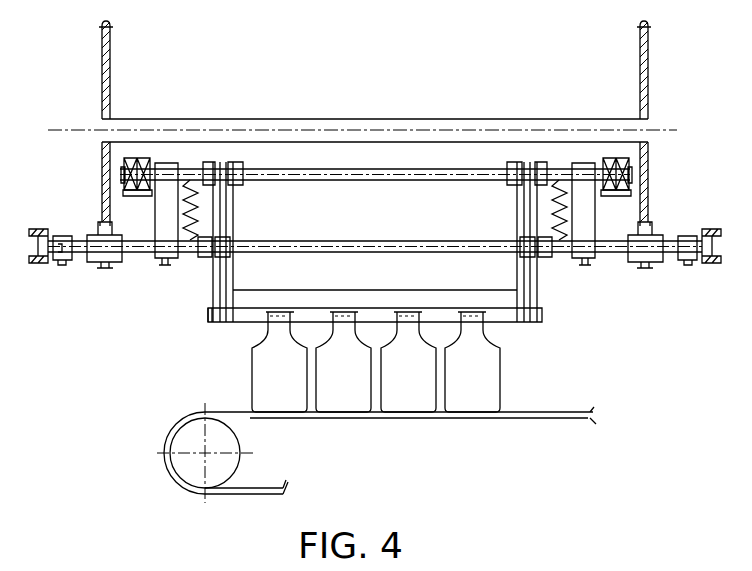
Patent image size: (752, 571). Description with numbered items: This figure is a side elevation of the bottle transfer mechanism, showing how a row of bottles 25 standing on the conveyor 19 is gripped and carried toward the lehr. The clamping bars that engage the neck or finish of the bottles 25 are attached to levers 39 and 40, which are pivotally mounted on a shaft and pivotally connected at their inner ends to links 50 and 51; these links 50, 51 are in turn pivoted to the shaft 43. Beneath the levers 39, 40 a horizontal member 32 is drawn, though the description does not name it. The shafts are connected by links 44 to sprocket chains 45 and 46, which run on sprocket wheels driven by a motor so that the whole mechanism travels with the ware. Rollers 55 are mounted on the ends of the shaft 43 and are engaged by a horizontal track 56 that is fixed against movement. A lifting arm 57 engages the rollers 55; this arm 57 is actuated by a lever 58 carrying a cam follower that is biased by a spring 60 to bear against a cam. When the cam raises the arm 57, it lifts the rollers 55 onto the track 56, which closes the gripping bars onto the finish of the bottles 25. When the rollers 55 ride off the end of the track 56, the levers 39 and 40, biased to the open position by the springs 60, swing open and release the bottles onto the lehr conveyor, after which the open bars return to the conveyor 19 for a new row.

The conveyor 19 is at (452, 418).
The bottles 25 is at (252, 389).
The support bar 32 is at (542, 315).
The lever 39 is at (210, 300).
The lever 40 is at (230, 278).
The shaft 43 is at (430, 168).
The links 44 is at (118, 264).
The sprocket chain 45 is at (113, 232).
The sprocket chain 46 is at (655, 228).
The link 50 is at (216, 203).
The link 51 is at (228, 226).
The rollers 55 is at (150, 158).
The horizontal track 56 is at (145, 193).
The lifting arm 57 is at (60, 265).
The lever 58 is at (161, 262).
The spring 60 is at (193, 244).